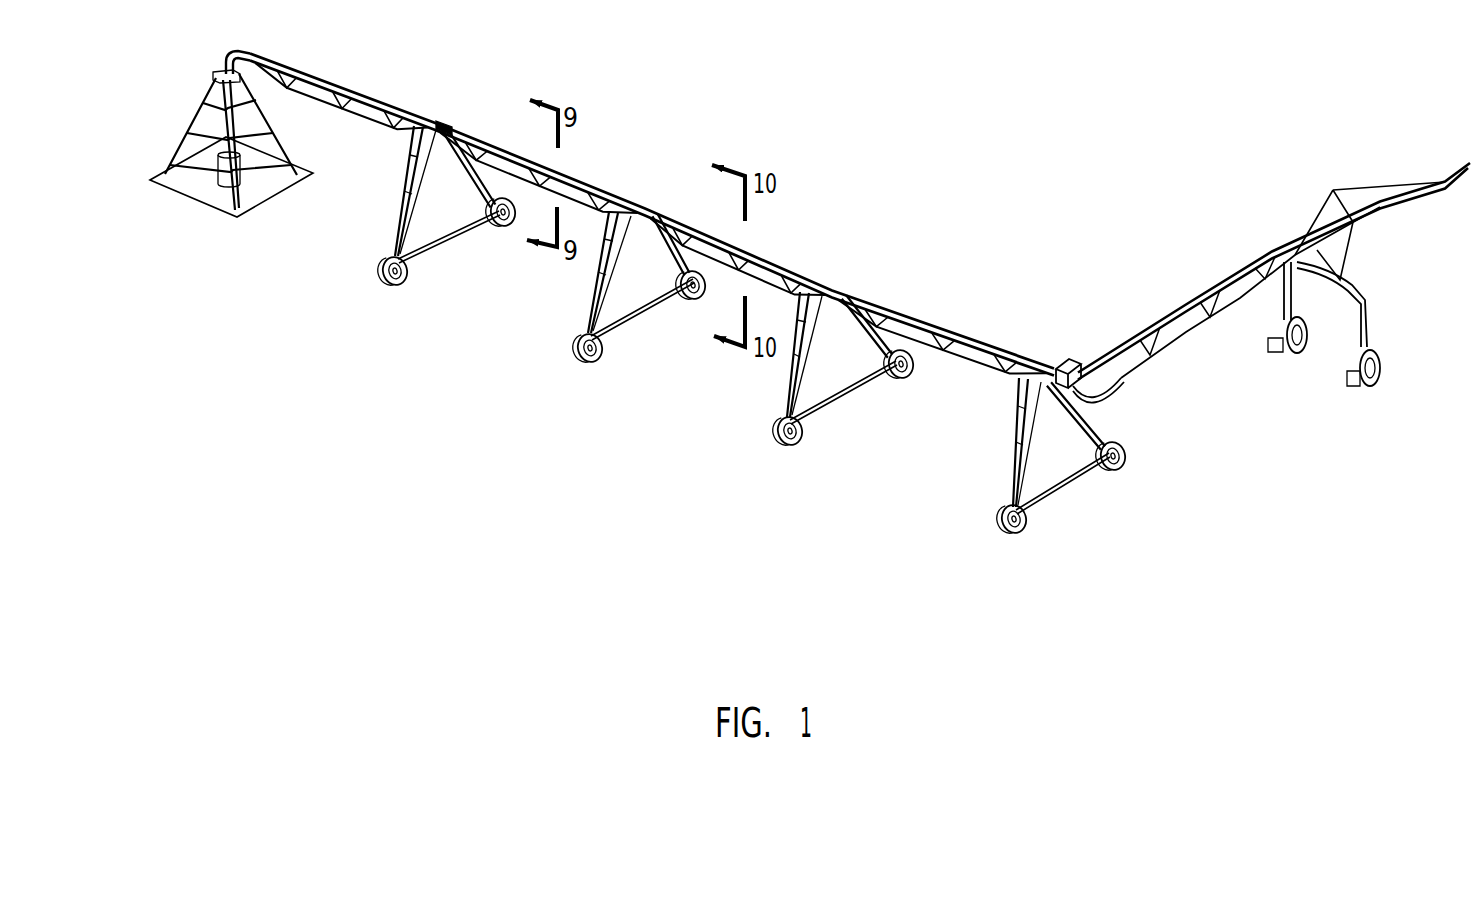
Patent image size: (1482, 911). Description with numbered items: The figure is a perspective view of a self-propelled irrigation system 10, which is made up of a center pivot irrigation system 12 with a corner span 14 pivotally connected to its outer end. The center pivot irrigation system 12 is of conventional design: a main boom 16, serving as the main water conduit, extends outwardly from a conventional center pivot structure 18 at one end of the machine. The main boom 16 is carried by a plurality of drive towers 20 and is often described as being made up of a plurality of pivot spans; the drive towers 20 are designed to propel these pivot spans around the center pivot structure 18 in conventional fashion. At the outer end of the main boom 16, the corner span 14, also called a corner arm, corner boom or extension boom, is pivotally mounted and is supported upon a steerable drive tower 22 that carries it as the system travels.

The self-propelled irrigation system 10 is at (973, 267).
The center pivot irrigation system 12 is at (669, 196).
The corner span 14 is at (1206, 286).
The main boom 16 is at (392, 102).
The center pivot structure 18 is at (292, 141).
The drive towers 20 is at (396, 210).
The steerable drive tower 22 is at (1356, 324).